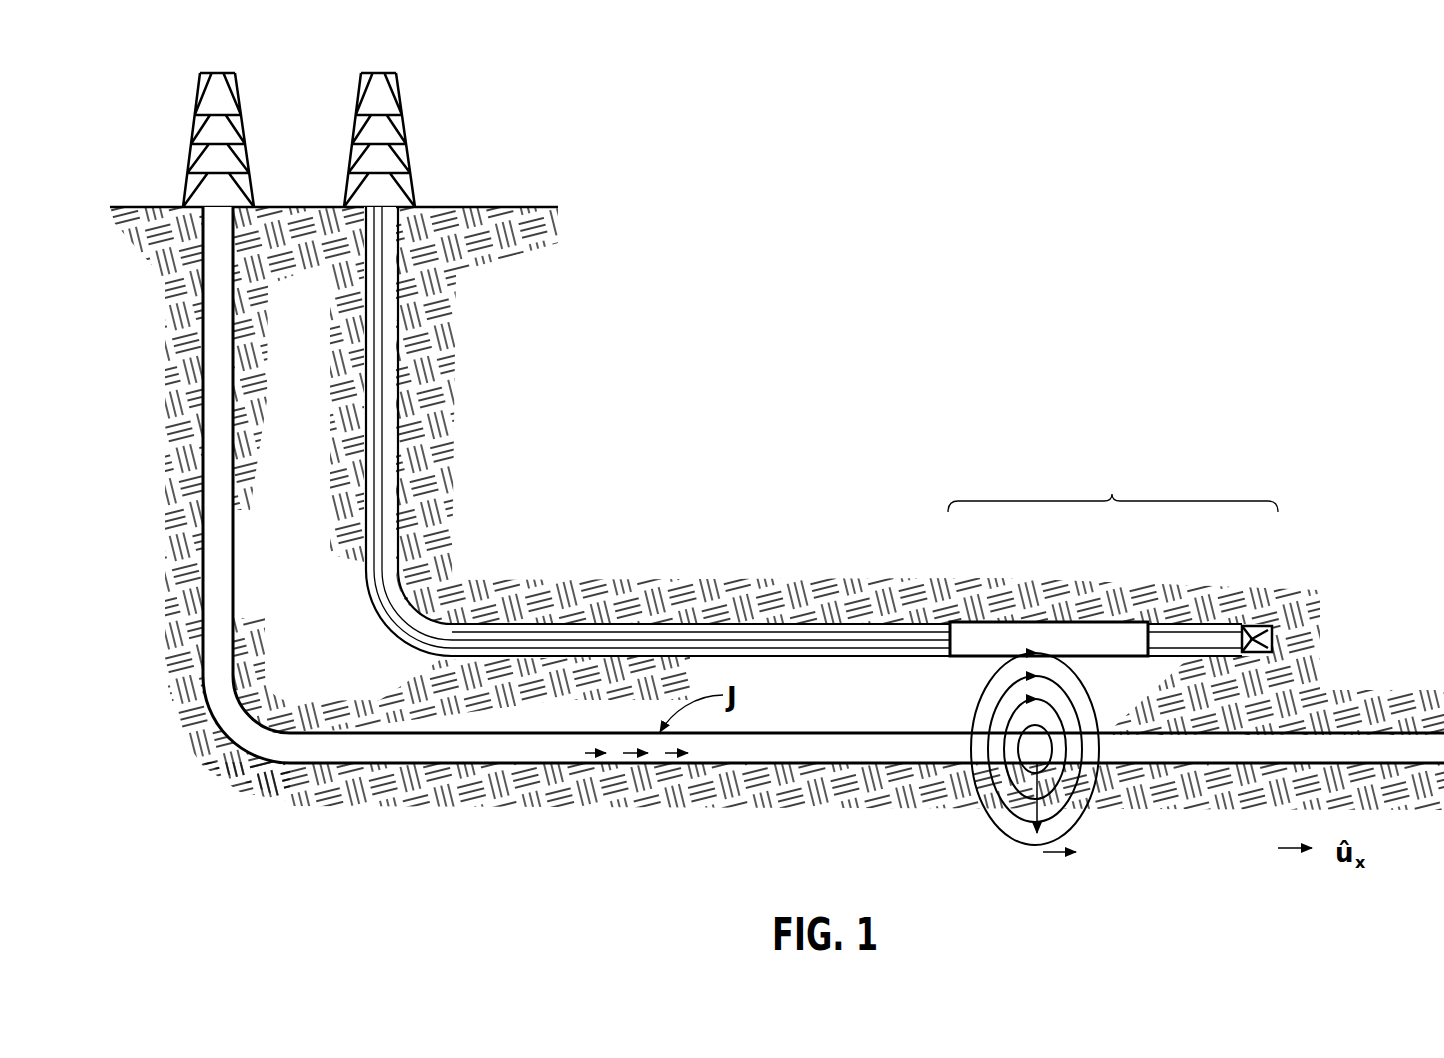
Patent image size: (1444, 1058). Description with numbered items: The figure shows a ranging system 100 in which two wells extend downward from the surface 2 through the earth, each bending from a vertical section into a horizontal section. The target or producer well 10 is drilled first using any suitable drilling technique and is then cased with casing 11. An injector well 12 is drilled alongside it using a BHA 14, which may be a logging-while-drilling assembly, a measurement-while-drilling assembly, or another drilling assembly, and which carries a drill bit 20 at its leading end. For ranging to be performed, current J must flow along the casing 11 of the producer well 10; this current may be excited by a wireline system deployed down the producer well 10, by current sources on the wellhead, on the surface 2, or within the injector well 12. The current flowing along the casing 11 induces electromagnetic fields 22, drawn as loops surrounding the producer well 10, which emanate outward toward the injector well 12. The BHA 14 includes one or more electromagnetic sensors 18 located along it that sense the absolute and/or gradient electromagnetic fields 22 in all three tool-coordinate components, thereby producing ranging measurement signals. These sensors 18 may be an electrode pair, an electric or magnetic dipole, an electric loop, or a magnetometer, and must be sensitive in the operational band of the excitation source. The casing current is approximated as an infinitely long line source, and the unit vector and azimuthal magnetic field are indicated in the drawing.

The ranging system 100 is at (599, 84).
The surface 2 is at (498, 206).
The producer well 10 is at (212, 377).
The casing 11 is at (210, 463).
The injector well 12 is at (382, 452).
The BHA 14 is at (1112, 498).
The electromagnetic sensors 18 is at (1071, 620).
The drill bit 20 is at (1250, 622).
The electromagnetic fields 22 is at (1003, 845).